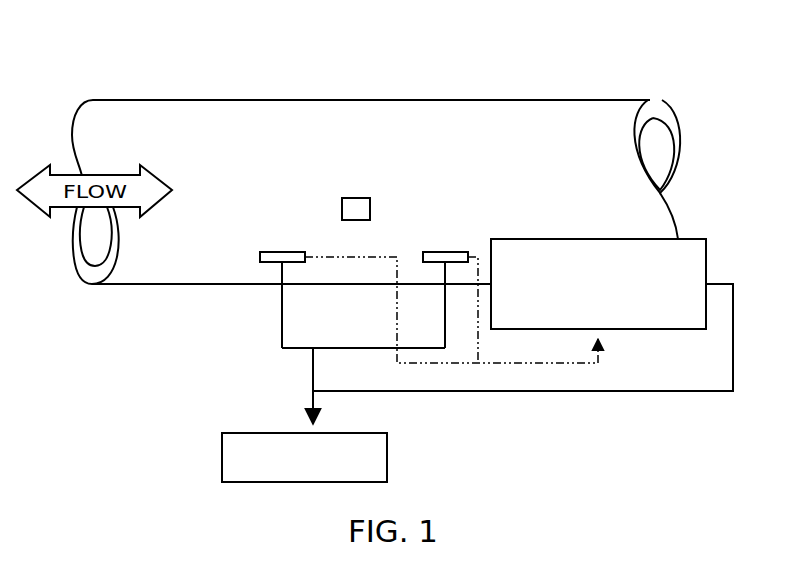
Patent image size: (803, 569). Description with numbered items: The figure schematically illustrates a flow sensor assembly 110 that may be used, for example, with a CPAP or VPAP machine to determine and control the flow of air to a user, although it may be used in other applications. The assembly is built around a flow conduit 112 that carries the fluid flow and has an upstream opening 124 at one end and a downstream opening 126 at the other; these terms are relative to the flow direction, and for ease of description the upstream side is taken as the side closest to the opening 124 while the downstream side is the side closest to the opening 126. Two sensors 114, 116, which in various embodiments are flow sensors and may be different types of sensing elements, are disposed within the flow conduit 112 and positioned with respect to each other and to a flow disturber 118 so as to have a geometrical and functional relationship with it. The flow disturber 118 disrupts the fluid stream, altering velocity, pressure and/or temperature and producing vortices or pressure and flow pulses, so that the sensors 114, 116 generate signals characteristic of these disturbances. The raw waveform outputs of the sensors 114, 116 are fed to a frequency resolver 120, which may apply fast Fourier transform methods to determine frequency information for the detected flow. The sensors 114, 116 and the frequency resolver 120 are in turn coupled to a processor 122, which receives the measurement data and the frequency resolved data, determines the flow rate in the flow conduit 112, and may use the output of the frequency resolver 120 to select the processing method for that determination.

The flow sensor assembly 110 is at (636, 62).
The flow conduit 112 is at (453, 100).
The sensor 114 is at (452, 252).
The sensor 116 is at (282, 252).
The flow disturber 118 is at (355, 198).
The frequency resolver 120 is at (706, 258).
The processor 122 is at (387, 455).
The upstream opening 124 is at (679, 183).
The downstream opening 126 is at (61, 236).